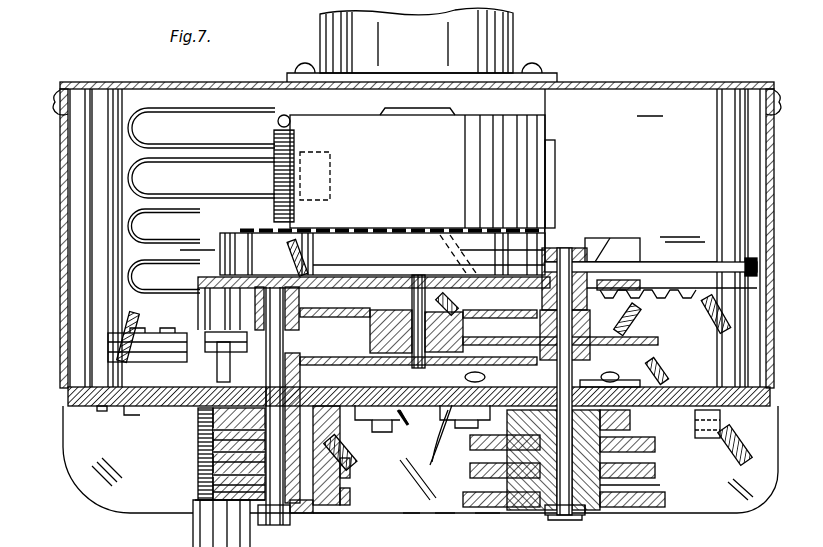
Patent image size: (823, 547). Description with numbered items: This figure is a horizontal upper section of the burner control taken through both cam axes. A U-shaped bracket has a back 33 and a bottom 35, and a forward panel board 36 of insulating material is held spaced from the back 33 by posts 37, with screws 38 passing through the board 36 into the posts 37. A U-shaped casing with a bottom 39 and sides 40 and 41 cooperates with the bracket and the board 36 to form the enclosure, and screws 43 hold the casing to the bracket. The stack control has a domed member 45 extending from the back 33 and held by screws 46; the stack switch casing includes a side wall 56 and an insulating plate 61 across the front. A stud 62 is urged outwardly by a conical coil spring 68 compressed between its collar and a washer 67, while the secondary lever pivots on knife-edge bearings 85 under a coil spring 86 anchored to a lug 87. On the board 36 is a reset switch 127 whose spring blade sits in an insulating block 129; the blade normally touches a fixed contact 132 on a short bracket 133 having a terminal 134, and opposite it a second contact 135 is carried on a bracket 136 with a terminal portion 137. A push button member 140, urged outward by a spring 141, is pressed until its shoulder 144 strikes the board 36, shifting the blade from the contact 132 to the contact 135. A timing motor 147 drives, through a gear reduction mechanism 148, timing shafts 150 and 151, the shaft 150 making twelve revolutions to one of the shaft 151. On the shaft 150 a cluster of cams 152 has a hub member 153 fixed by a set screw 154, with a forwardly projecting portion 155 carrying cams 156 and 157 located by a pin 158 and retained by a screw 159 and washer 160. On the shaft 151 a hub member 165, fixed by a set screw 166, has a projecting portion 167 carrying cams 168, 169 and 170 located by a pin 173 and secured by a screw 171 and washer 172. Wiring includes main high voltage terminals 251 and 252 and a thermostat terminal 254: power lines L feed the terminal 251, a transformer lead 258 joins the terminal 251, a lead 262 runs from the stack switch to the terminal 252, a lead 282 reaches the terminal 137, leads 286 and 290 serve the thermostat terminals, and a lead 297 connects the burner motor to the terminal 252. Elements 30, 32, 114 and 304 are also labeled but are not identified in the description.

The housing assembly 30 is at (680, 62).
The motor unit 32 is at (310, 40).
The back 33 is at (225, 83).
The bottom 35 is at (100, 500).
The forward panel board 36 is at (68, 400).
The posts 37 is at (95, 226).
The screws 38 is at (100, 408).
The casing bottom 39 is at (163, 100).
The casing side 40 is at (62, 318).
The casing side 41 is at (775, 195).
The screws 43 is at (267, 395).
The domed member 45 is at (515, 37).
The screws 46 is at (303, 68).
The side wall 56 is at (620, 108).
The insulating plate 61 is at (758, 267).
The stud 62 is at (445, 546).
The washer 67 is at (487, 530).
The conical coil spring 68 is at (406, 546).
The knife-edge bearings 85 is at (330, 167).
The coil spring 86 is at (273, 131).
The lug 87 is at (302, 262).
The drive shaft 114 is at (412, 300).
The reset switch 127 is at (202, 330).
The insulating block 129 is at (148, 338).
The fixed contact 132 is at (235, 308).
The short bracket 133 is at (342, 375).
The terminal 134 is at (345, 448).
The second contact 135 is at (290, 335).
The bracket 136 is at (207, 342).
The terminal portion 137 is at (127, 408).
The push button member 140 is at (200, 541).
The spring 141 is at (205, 478).
The shoulder 144 is at (205, 448).
The timing motor 147 is at (556, 178).
The gear reduction mechanism 148 is at (474, 303).
The timing shaft 150 is at (300, 356).
The timing shaft 151 is at (605, 386).
The cluster of cams 152 is at (205, 452).
The hub member 153 is at (205, 432).
The set screw 154 is at (200, 419).
The forwardly projecting portion 155 is at (260, 526).
The cam 156 is at (205, 471).
The cam 157 is at (200, 503).
The pin 158 is at (345, 483).
The screw 159 is at (288, 516).
The washer 160 is at (325, 514).
The hub member 165 is at (628, 426).
The set screw 166 is at (480, 428).
The projecting portion 167 is at (590, 513).
The cam 168 is at (656, 445).
The cam 169 is at (656, 470).
The cam 170 is at (666, 499).
The screw 171 is at (556, 517).
The washer 172 is at (541, 516).
The pin 173 is at (660, 484).
The main high voltage terminal 251 is at (380, 426).
The main high voltage terminal 252 is at (433, 441).
The thermostat terminal 254 is at (720, 436).
The lead 258 is at (410, 412).
The lead 262 is at (714, 312).
The lead 282 is at (120, 318).
The lead 286 is at (630, 320).
The lead 290 is at (655, 368).
The lead 297 is at (475, 482).
The cable 304 is at (745, 458).
The power lines L is at (389, 468).